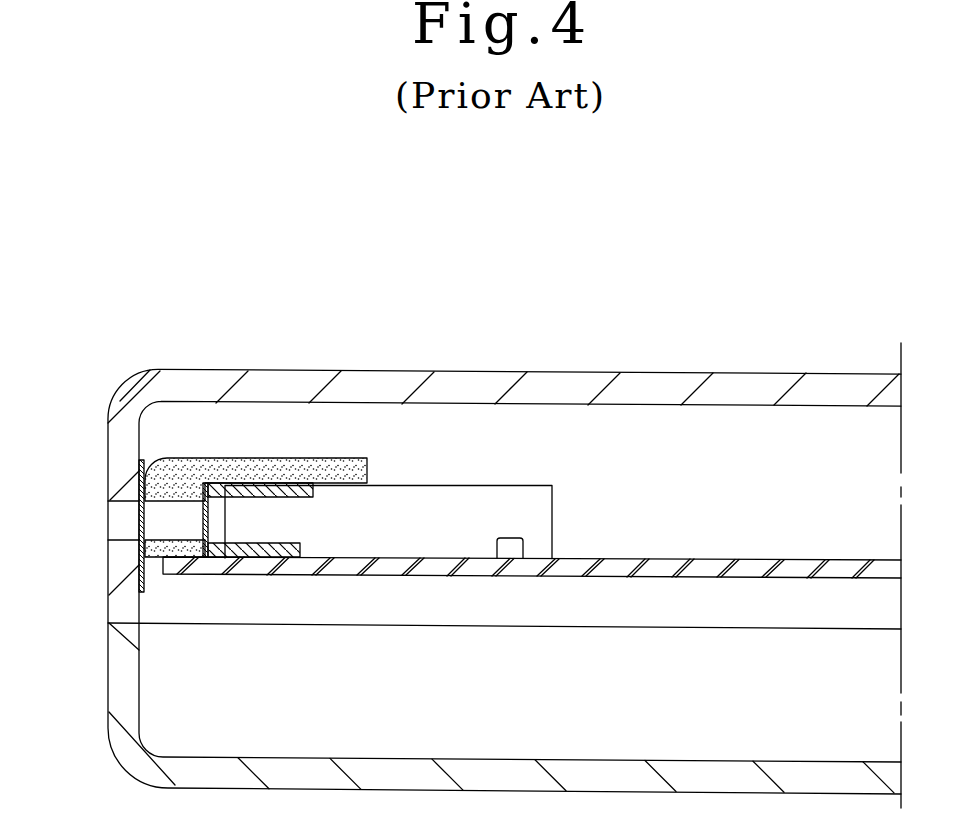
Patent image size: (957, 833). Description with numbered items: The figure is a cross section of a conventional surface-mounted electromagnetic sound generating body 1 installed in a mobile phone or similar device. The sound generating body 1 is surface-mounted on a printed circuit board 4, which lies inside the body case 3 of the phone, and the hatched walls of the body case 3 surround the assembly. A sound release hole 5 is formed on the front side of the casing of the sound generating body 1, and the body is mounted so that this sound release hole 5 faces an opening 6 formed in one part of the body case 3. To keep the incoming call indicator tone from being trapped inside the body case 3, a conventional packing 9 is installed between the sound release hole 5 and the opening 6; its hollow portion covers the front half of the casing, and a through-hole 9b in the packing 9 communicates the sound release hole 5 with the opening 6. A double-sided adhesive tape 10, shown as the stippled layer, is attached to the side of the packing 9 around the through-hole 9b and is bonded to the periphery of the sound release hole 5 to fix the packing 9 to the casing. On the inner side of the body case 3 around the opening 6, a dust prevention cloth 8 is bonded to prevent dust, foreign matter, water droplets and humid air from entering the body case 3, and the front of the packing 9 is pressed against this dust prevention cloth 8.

The surface-mounted electromagnetic sound generating body 1 is at (481, 487).
The body case 3 is at (677, 372).
The printed circuit board 4 is at (745, 558).
The sound release hole 5 is at (223, 520).
The opening 6 is at (117, 523).
The dust prevention cloth 8 is at (143, 461).
The packing 9 is at (300, 546).
The through-hole 9b is at (177, 525).
The double-sided adhesive tape 10 is at (199, 478).